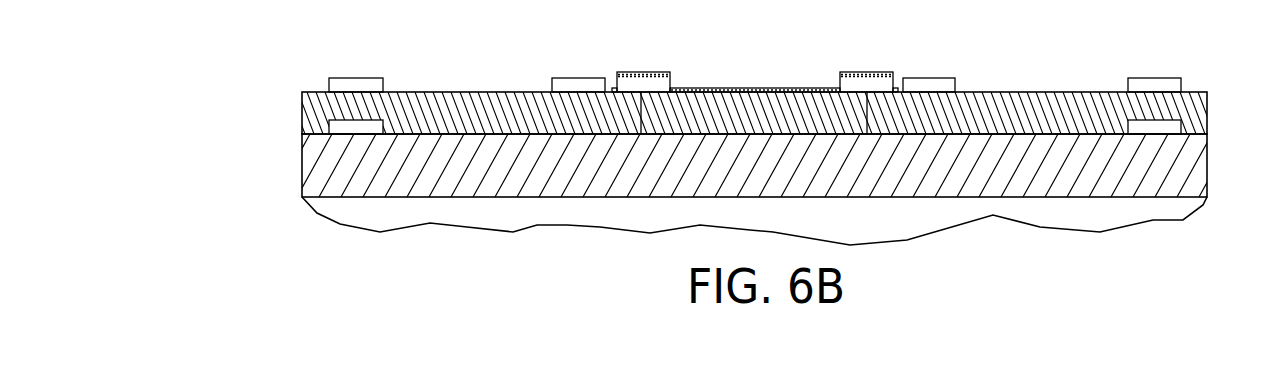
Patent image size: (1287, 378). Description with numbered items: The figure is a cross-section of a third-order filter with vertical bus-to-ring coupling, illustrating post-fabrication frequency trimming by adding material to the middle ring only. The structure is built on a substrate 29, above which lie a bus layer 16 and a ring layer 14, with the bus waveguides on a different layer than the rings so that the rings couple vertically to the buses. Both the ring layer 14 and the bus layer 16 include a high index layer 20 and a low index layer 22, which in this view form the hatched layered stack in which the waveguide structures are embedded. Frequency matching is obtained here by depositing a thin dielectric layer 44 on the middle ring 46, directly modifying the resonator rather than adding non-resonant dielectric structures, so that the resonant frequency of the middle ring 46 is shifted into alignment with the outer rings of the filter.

The ring layer 14 is at (282, 85).
The bus layer 16 is at (282, 128).
The high index layer 20 is at (1176, 124).
The low index layer 22 is at (1185, 159).
The substrate 29 is at (1186, 206).
The thin dielectric layer 44 is at (748, 88).
The middle ring 46 is at (867, 147).